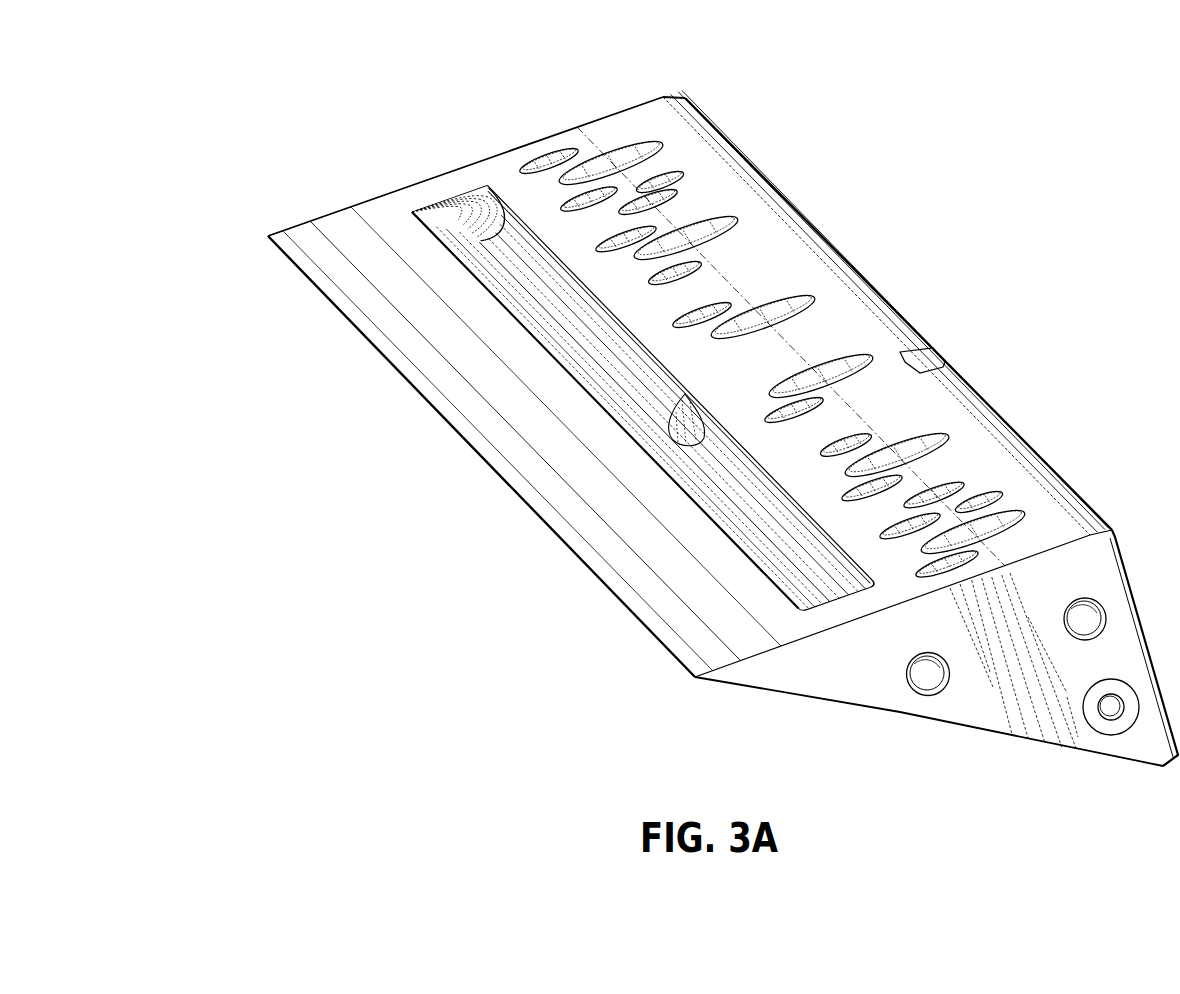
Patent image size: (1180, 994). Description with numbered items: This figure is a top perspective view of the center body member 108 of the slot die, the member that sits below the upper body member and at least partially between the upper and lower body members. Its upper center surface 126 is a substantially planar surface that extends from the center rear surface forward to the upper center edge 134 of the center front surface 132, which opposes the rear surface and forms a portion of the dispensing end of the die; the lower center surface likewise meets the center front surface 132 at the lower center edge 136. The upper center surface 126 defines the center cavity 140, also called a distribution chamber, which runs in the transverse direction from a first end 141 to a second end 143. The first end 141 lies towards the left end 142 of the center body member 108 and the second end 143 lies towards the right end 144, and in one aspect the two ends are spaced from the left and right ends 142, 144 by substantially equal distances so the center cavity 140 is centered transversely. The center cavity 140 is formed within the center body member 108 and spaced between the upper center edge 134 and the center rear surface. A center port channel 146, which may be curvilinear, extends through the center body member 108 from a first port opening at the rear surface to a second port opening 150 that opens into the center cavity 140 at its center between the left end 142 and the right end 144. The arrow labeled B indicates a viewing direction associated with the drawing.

The center body member 108 is at (241, 129).
The upper center surface 126 is at (345, 230).
The center front surface 132 is at (694, 690).
The upper center edge 134 is at (706, 680).
The lower center edge 136 is at (706, 674).
The center cavity 140 is at (569, 311).
The first end 141 is at (466, 200).
The left end 142 is at (515, 135).
The second end 143 is at (842, 594).
The right end 144 is at (998, 710).
The center port channel 146 is at (676, 424).
The second port opening 150 is at (652, 445).
The viewing direction B is at (694, 78).